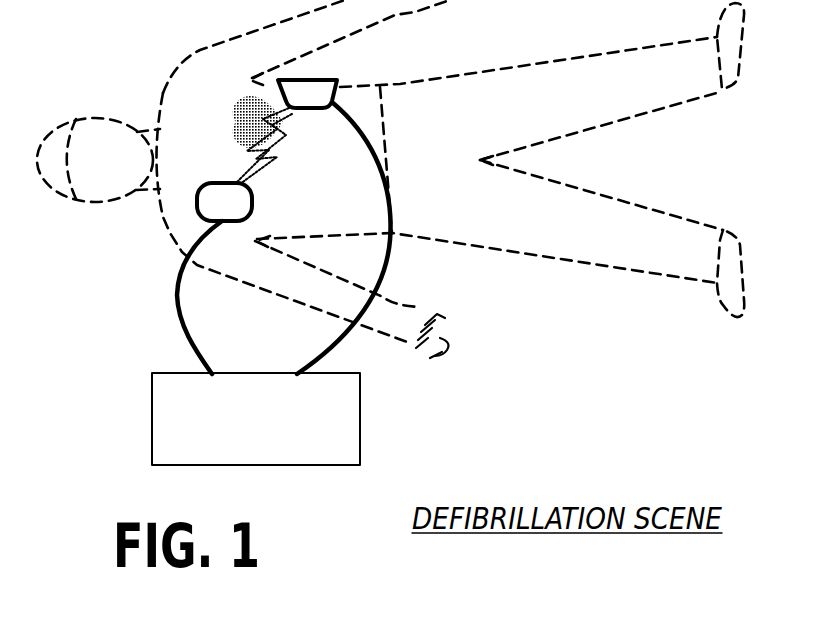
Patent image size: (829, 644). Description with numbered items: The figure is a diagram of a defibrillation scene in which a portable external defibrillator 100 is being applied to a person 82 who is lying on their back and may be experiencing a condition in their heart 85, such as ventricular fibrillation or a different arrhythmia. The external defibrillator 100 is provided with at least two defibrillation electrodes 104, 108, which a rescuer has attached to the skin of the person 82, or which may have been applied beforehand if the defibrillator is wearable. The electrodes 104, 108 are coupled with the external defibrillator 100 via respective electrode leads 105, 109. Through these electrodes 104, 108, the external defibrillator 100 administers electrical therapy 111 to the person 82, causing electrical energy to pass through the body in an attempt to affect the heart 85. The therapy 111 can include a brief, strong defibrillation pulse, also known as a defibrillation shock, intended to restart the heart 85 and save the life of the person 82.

The person 82 is at (173, 81).
The heart 85 is at (234, 101).
The external defibrillator 100 is at (239, 404).
The defibrillation electrode 104 is at (195, 212).
The electrode lead 105 is at (175, 309).
The defibrillation electrode 108 is at (314, 70).
The electrode lead 109 is at (316, 348).
The electrical therapy 111 is at (260, 171).